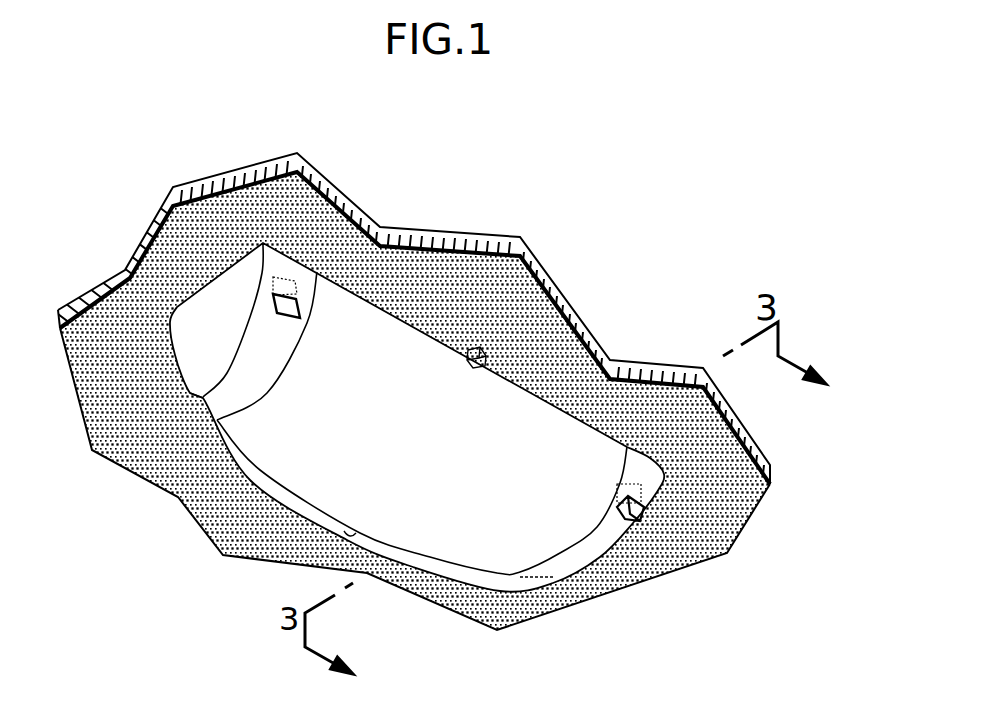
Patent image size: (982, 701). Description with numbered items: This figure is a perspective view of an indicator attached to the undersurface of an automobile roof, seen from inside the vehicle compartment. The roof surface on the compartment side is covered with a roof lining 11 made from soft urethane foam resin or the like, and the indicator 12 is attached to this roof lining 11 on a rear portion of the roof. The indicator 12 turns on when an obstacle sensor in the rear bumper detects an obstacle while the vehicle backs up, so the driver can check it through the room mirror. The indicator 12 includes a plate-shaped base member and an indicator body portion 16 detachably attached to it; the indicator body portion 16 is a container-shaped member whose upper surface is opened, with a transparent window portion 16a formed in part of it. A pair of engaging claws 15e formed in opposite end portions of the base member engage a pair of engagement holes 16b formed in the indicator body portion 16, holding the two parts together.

The roof lining 11 is at (585, 308).
The indicator 12 is at (224, 488).
The engaging claw 15e is at (296, 302).
The indicator body portion 16 is at (412, 567).
The transparent window portion 16a is at (350, 532).
The engagement hole 16b is at (300, 322).